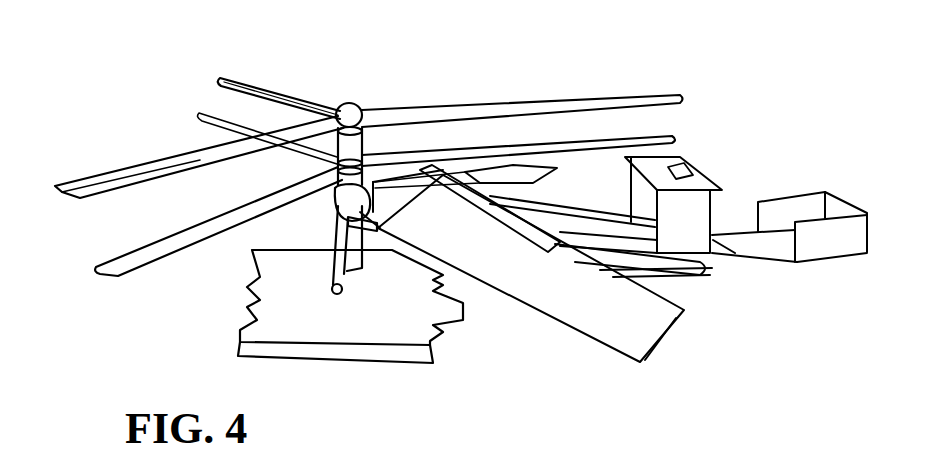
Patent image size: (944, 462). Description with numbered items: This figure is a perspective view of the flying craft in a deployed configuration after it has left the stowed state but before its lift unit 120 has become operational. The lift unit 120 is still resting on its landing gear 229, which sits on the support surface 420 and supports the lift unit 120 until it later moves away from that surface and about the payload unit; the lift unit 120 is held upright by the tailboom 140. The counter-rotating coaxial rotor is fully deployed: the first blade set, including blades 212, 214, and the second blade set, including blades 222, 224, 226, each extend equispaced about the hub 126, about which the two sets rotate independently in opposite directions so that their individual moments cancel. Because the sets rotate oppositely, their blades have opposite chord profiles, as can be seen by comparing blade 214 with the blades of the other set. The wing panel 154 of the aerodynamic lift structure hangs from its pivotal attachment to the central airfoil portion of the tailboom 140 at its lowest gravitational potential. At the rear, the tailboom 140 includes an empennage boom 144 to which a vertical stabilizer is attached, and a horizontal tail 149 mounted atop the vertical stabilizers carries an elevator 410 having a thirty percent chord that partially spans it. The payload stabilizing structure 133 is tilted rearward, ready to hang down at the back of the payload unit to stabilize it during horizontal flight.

The lift unit 120 is at (148, 74).
The hub 126 is at (349, 101).
The blade 222 is at (606, 97).
The blade 224 is at (108, 197).
The blade 226 is at (249, 79).
The blade 212 is at (583, 143).
The blade 214 is at (165, 253).
The landing gear 229 is at (338, 279).
The support surface 420 is at (408, 327).
The wing panel 154 is at (488, 170).
The empennage boom 144 is at (550, 205).
The tailboom 140 is at (706, 144).
The horizontal tail 149 is at (717, 183).
The elevator 410 is at (696, 167).
The payload stabilizing structure 133 is at (815, 189).